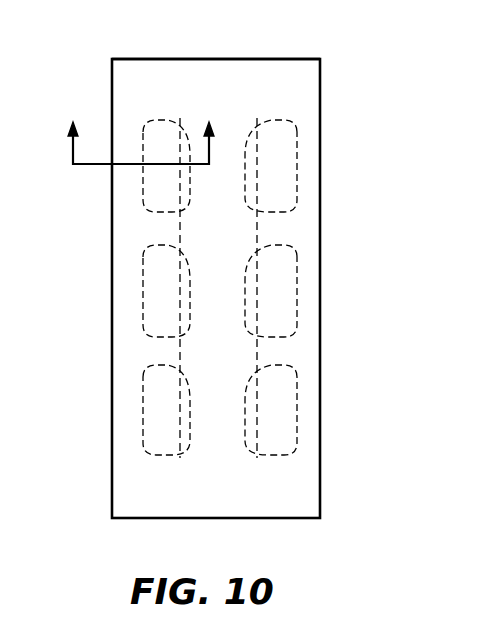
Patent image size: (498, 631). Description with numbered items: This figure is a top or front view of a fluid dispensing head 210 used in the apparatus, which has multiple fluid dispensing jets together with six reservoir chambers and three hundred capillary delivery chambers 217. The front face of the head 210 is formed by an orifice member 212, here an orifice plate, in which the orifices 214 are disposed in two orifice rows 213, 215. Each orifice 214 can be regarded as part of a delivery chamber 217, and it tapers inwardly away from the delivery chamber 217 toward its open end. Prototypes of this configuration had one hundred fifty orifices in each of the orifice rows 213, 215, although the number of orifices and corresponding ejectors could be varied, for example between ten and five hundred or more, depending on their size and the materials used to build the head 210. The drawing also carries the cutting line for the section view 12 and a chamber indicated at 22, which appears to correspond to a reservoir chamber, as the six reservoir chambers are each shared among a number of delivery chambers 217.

The fluid dispensing head 210 is at (335, 110).
The orifice member 212 is at (307, 80).
The orifice row 213 is at (180, 460).
The orifice row 215 is at (257, 460).
The well 22 is at (160, 145).
The delivery chamber 217 is at (188, 157).
The orifice 214 is at (180, 236).
The section line 12- 12 is at (142, 138).